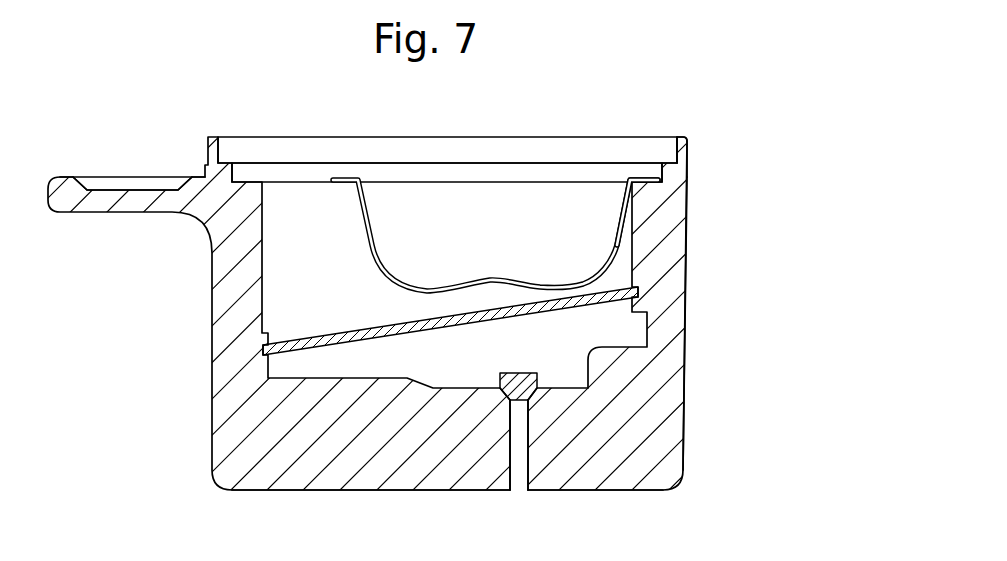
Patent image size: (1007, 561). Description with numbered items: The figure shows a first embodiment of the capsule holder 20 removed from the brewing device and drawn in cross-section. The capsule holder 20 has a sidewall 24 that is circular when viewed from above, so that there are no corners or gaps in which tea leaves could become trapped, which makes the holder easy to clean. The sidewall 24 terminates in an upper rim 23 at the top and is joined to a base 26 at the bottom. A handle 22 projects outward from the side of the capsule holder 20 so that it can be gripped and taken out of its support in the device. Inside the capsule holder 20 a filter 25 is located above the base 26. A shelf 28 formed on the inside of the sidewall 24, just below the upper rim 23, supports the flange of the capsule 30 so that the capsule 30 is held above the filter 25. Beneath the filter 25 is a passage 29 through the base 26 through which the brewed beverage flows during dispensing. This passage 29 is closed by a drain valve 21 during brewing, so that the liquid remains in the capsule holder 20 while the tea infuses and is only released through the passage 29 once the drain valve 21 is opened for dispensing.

The capsule holder 20 is at (717, 270).
The drain valve 21 is at (531, 377).
The handle 22 is at (137, 192).
The upper rim 23 is at (682, 137).
The sidewall 24 is at (678, 320).
The filter 25 is at (355, 336).
The base 26 is at (417, 490).
The shelf 28 is at (643, 197).
The passage 29 is at (522, 438).
The capsule 30 is at (370, 232).